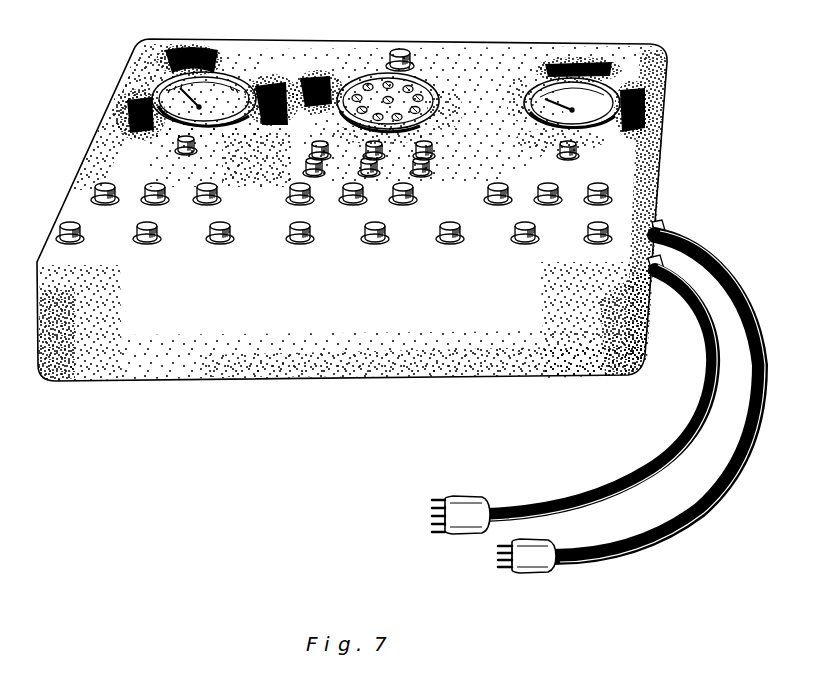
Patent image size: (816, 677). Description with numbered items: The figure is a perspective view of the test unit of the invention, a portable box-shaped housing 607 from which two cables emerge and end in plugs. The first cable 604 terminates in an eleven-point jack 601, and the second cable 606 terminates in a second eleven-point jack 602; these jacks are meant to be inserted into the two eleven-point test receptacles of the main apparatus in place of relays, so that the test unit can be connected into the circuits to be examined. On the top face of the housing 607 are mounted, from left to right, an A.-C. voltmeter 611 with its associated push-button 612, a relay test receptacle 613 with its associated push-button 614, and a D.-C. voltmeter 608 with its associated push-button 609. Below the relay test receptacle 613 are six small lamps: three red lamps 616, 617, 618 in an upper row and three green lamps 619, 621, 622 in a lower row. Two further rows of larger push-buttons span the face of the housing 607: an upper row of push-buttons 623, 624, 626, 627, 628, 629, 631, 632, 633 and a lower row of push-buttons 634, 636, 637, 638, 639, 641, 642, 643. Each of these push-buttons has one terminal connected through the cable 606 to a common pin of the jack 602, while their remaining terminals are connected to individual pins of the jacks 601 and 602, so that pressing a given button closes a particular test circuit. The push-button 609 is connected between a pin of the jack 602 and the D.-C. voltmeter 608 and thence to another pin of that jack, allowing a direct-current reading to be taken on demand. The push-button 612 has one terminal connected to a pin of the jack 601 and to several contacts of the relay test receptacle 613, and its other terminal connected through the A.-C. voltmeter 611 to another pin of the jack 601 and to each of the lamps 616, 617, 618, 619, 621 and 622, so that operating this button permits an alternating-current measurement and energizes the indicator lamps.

The 11-point jack 601 is at (448, 497).
The 11-point jack 602 is at (517, 573).
The cable 604 is at (703, 343).
The cable 606 is at (706, 247).
The housing 607 is at (588, 45).
The D.-C. voltmeter 608 is at (607, 98).
The push-button 609 is at (576, 144).
The A.-C. voltmeter 611 is at (219, 78).
The push-button 612 is at (191, 139).
The relay test receptacle 613 is at (418, 92).
The push-button 614 is at (410, 54).
The red lamp 616 is at (322, 145).
The red lamp 617 is at (377, 145).
The red lamp 618 is at (428, 145).
The green lamp 619 is at (316, 163).
The green lamp 621 is at (372, 163).
The green lamp 622 is at (424, 163).
The push-button 623 is at (97, 198).
The push-button 624 is at (147, 198).
The push-button 626 is at (199, 198).
The push-button 627 is at (292, 198).
The push-button 628 is at (345, 198).
The push-button 629 is at (396, 198).
The push-button 631 is at (490, 198).
The push-button 632 is at (540, 198).
The push-button 633 is at (590, 198).
The push-button 634 is at (75, 229).
The push-button 636 is at (151, 229).
The push-button 637 is at (224, 229).
The push-button 638 is at (304, 229).
The push-button 639 is at (379, 229).
The push-button 641 is at (454, 229).
The push-button 642 is at (529, 229).
The push-button 643 is at (602, 229).